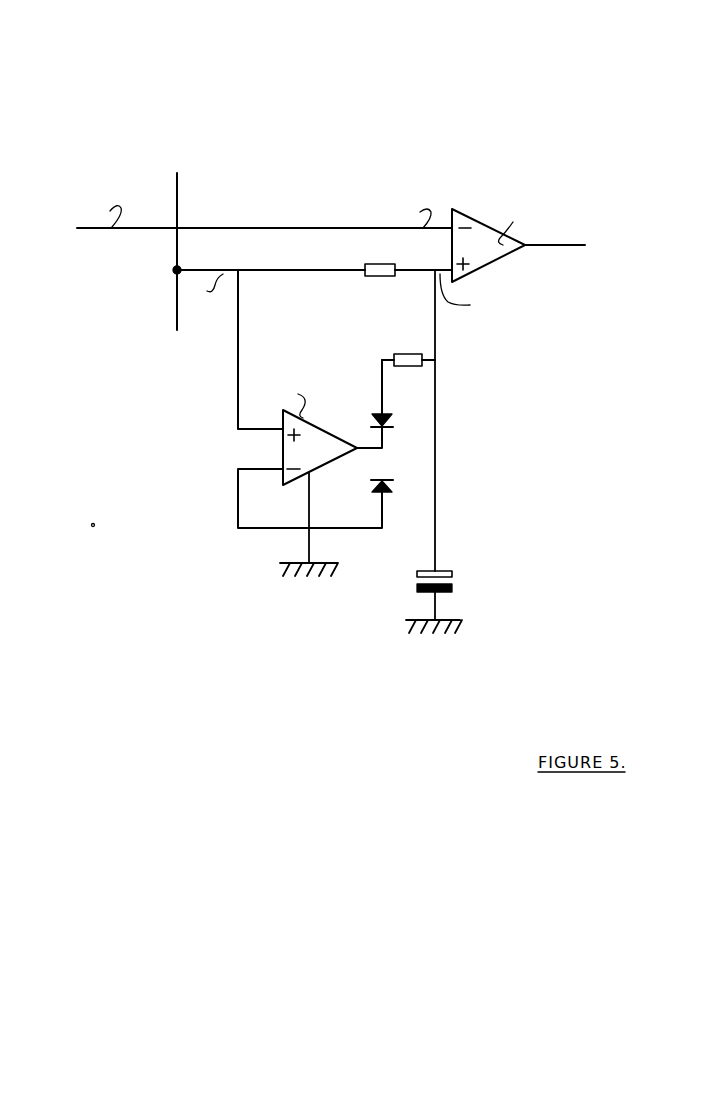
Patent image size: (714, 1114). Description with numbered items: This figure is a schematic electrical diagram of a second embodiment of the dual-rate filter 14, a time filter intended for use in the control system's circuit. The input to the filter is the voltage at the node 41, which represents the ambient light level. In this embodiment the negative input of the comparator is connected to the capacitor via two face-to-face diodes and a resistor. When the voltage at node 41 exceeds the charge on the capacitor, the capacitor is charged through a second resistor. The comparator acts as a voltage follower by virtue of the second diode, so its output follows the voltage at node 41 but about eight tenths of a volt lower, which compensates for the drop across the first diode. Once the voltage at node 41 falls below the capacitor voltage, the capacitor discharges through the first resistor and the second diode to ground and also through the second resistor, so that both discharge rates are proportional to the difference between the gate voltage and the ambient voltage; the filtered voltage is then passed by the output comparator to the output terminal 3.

The dual-rate filter 14 is at (312, 328).
The node 41 is at (168, 273).
The output terminal 3 is at (555, 236).